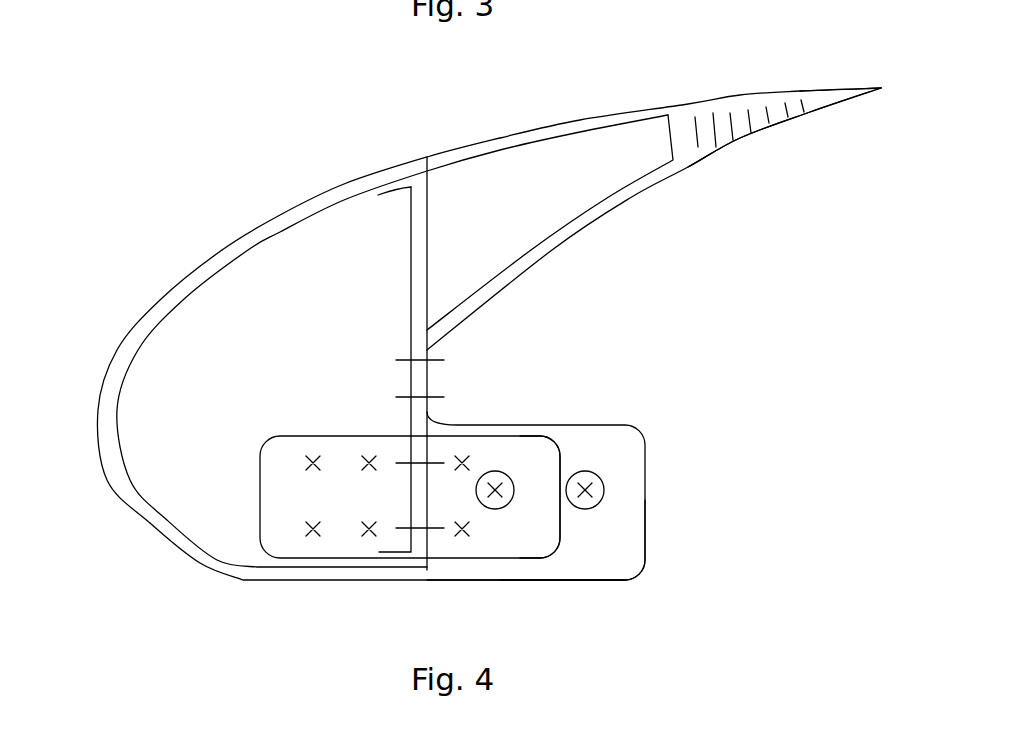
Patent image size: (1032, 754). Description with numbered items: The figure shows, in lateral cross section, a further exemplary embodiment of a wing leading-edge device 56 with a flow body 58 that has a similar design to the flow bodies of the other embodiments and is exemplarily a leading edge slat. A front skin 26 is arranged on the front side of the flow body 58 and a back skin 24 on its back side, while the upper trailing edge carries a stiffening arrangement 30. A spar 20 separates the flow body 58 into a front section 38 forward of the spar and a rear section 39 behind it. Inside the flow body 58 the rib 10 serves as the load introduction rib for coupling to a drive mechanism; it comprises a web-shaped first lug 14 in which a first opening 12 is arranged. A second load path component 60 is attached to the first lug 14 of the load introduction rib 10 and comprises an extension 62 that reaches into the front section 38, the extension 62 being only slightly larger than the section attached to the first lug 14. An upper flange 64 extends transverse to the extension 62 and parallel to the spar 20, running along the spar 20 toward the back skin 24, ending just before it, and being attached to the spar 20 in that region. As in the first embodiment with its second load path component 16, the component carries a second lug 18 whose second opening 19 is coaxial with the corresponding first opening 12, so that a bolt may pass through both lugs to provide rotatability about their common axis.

In FIG. 4, the rib 10 is at (133, 442).
In FIG. 4, the first opening 12 is at (598, 488).
In FIG. 4, the first lug 14 is at (599, 435).
In FIG. 3, the second load path component 16 is at (572, 5).
In FIG. 4, the second lug 18 is at (543, 542).
In FIG. 4, the second opening 19 is at (494, 503).
In FIG. 4, the spar 20 is at (414, 262).
In FIG. 4, the back skin 24 is at (617, 207).
In FIG. 4, the front skin 26 is at (873, 70).
In FIG. 4, the stiffening arrangement 30 is at (748, 113).
In FIG. 4, the front section 38 is at (175, 330).
In FIG. 4, the rear section 39 is at (636, 307).
In FIG. 4, the wing leading-edge device 56 is at (187, 203).
In FIG. 4, the flow body 58 is at (343, 183).
In FIG. 4, the second load path component 60 is at (515, 462).
In FIG. 4, the extension 62 is at (337, 450).
In FIG. 4, the upper flange 64 is at (452, 365).